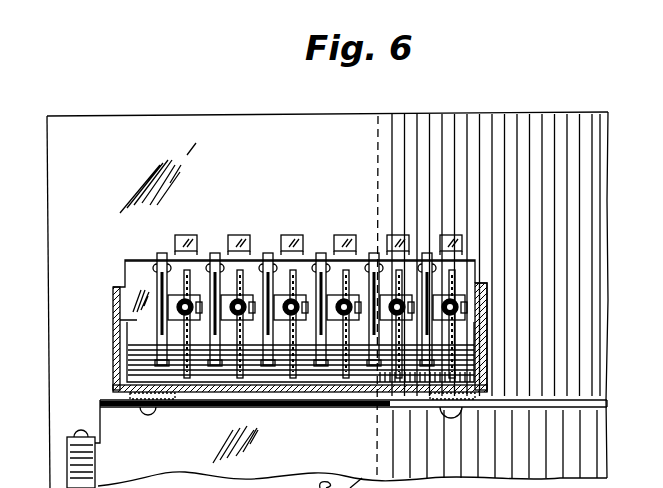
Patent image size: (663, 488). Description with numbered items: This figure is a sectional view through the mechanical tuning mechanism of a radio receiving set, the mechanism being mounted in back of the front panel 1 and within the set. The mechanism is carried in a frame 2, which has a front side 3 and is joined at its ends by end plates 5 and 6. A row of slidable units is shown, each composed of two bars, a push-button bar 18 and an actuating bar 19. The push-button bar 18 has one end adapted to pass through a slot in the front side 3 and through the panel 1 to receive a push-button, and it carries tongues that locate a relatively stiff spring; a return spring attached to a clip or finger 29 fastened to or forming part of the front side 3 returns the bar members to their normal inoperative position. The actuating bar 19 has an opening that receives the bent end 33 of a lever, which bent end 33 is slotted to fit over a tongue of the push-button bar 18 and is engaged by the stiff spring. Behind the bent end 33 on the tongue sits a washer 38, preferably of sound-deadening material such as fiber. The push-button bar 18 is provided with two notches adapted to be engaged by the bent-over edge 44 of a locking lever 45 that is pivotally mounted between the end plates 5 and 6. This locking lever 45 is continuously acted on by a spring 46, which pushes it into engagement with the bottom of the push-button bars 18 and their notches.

The front panel 1 is at (58, 337).
The frame 2 is at (113, 321).
The front side of frame 3 is at (134, 295).
The end plate 5 is at (118, 346).
The end plate 6 is at (488, 318).
The push-button bar 18 is at (190, 266).
The actuating bar 19 is at (160, 283).
The clip or finger 29 is at (209, 253).
The bent end of lever 33 is at (176, 240).
The washer 38 is at (190, 312).
The bent-over edge 44 is at (128, 357).
The locking lever 45 is at (116, 386).
The spring 46 is at (323, 407).